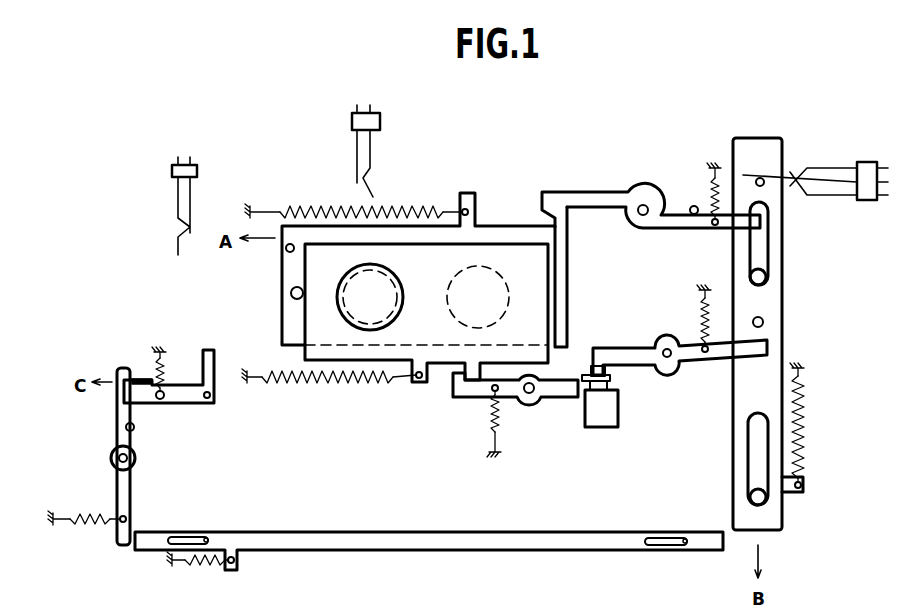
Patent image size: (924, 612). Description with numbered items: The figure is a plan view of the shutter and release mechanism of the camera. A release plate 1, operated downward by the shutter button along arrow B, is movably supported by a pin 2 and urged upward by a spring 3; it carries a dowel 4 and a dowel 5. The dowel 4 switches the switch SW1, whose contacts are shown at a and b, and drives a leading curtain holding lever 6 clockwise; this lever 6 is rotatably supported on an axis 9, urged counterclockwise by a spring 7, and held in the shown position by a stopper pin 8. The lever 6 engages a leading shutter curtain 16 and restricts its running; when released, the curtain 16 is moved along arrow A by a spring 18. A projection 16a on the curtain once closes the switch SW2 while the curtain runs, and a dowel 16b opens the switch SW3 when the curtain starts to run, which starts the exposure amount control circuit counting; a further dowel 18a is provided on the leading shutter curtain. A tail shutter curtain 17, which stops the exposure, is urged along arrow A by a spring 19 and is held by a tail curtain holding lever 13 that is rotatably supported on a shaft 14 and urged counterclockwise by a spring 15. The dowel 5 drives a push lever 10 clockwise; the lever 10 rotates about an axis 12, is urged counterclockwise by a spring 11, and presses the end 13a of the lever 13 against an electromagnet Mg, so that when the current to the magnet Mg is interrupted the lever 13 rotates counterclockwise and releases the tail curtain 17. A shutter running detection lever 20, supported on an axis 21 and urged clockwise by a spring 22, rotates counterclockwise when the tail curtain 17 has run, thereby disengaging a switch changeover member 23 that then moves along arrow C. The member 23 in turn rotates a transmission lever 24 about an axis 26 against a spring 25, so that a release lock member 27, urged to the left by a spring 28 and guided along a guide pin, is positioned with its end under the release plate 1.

The release plate 1 is at (765, 140).
The pin 2 is at (766, 278).
The spring 3 is at (802, 420).
The dowel 4 is at (764, 186).
The dowel 5 is at (764, 322).
The leading curtain holding lever 6 is at (634, 199).
The spring 7 is at (711, 170).
The stopper pin 8 is at (691, 206).
The axis 9 is at (643, 216).
The push lever 10 is at (627, 348).
The spring 11 is at (702, 291).
The axis 12 is at (673, 366).
The tail curtain holding lever 13 is at (458, 398).
The end 13a is at (590, 373).
The shaft 14 is at (540, 396).
The spring 15 is at (498, 425).
The leading shutter curtain 16 is at (500, 236).
The projection 16a is at (466, 192).
The dowel 16b is at (285, 250).
The tail shutter curtain 17 is at (540, 310).
The spring 18 is at (310, 210).
The dowel 18a is at (290, 294).
The spring 19 is at (334, 380).
The shutter running detection lever 20 is at (190, 400).
The axis 21 is at (214, 392).
The spring 22 is at (163, 378).
The switch changeover member 23 is at (138, 378).
The transmission lever 24 is at (132, 492).
The spring 25 is at (84, 515).
The axis 26 is at (340, 305).
The release lock member 27 is at (418, 530).
The spring 28 is at (200, 565).
The switch SW1 is at (866, 162).
The switch SW2 is at (382, 122).
The switch SW3 is at (196, 170).
The electromagnet Mg is at (618, 410).
The switch contact a is at (836, 197).
The switch contact b is at (836, 166).